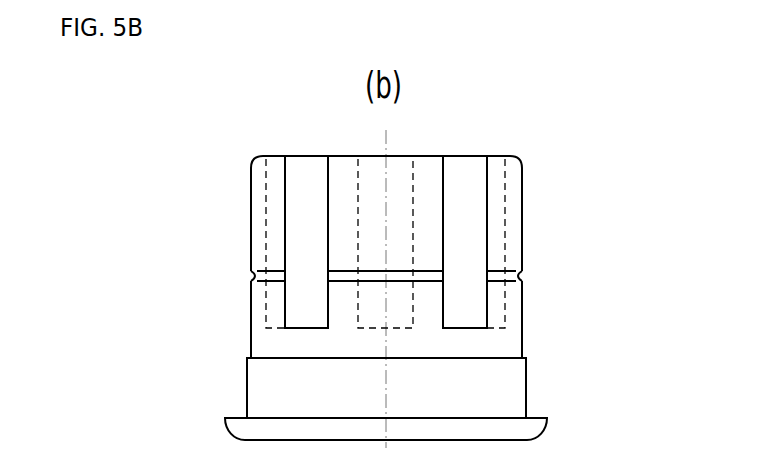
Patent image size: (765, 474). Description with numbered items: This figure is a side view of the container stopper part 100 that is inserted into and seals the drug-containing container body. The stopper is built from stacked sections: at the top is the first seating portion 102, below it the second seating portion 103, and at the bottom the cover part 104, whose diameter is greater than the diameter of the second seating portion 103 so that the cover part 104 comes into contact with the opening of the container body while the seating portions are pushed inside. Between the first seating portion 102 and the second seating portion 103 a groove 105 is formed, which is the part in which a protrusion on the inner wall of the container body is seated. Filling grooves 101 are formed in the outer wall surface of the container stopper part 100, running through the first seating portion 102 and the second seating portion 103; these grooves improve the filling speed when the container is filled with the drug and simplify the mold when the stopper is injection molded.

The container stopper part 100 is at (198, 357).
The filling groove 101 is at (300, 170).
The first seating portion 102 is at (522, 178).
The second seating portion 103 is at (523, 343).
The cover part 104 is at (546, 418).
The groove 105 is at (253, 277).